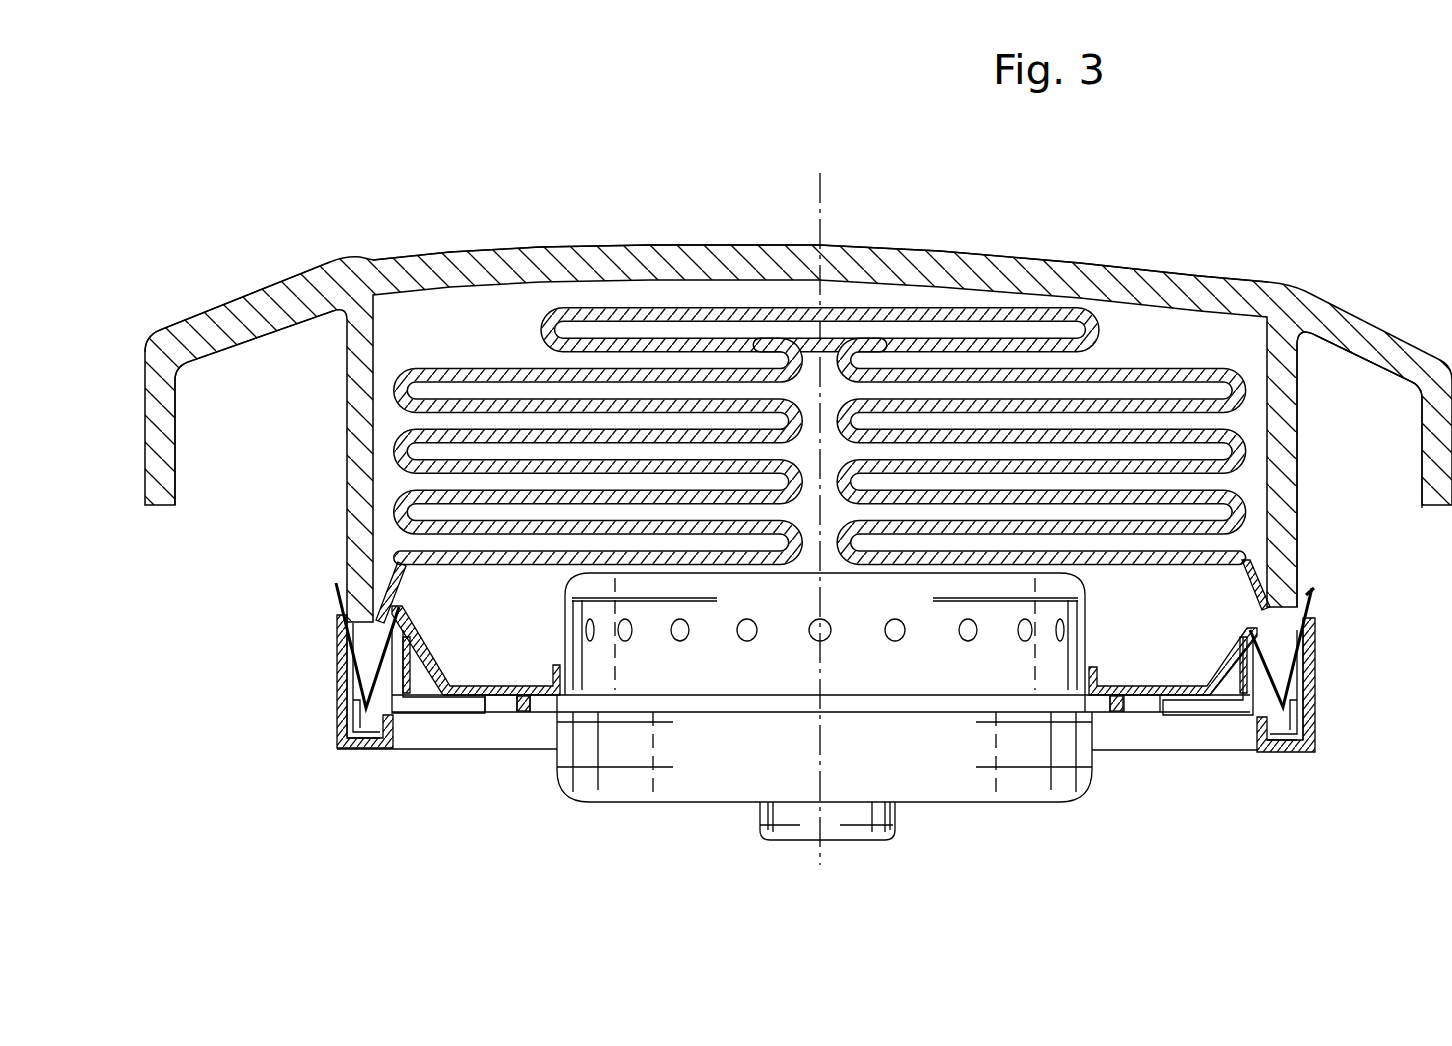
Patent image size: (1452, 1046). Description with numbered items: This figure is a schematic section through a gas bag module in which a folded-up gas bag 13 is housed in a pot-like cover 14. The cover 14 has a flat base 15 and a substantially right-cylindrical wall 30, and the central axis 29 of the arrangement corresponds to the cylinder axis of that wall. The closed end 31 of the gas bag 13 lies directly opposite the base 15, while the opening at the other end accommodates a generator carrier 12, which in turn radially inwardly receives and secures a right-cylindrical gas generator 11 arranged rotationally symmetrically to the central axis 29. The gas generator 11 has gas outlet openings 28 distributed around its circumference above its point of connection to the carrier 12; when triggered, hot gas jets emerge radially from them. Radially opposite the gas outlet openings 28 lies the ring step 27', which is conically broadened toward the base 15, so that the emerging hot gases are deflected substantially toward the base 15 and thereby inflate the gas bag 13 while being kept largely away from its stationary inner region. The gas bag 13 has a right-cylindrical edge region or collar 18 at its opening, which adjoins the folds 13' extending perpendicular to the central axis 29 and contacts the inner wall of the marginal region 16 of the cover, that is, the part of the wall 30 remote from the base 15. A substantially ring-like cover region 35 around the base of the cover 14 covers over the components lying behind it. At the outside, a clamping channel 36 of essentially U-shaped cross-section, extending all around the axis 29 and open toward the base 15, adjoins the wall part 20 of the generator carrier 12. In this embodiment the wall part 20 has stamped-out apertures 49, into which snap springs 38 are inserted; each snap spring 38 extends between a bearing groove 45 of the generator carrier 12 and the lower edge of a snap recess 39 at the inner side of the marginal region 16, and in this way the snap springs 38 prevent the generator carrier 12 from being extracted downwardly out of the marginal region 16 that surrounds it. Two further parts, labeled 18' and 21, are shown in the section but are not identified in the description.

The gas generator 11 is at (920, 748).
The generator carrier 12 is at (503, 706).
The gas bag 13 is at (1041, 391).
The folds 13' is at (598, 424).
The pot-like cover 14 is at (1010, 250).
The flat base 15 is at (627, 262).
The marginal region 16 is at (362, 600).
The edge region or collar 18 is at (823, 661).
The spring tongue end 18' is at (837, 692).
The wall part 20 is at (392, 688).
The spring clip 21 is at (368, 738).
The ring step 27' is at (476, 635).
The gas outlet openings 28 is at (814, 638).
The central axis 29 is at (820, 188).
The wall 30 is at (1282, 433).
The closed end 31 is at (724, 310).
The ring-like cover region 35 is at (214, 312).
The clamping channel 36 is at (340, 742).
The snap springs 38 is at (403, 658).
The snap recess 39 is at (1317, 652).
The bearing groove 45 is at (398, 580).
The stamped out apertures 49 is at (1250, 690).